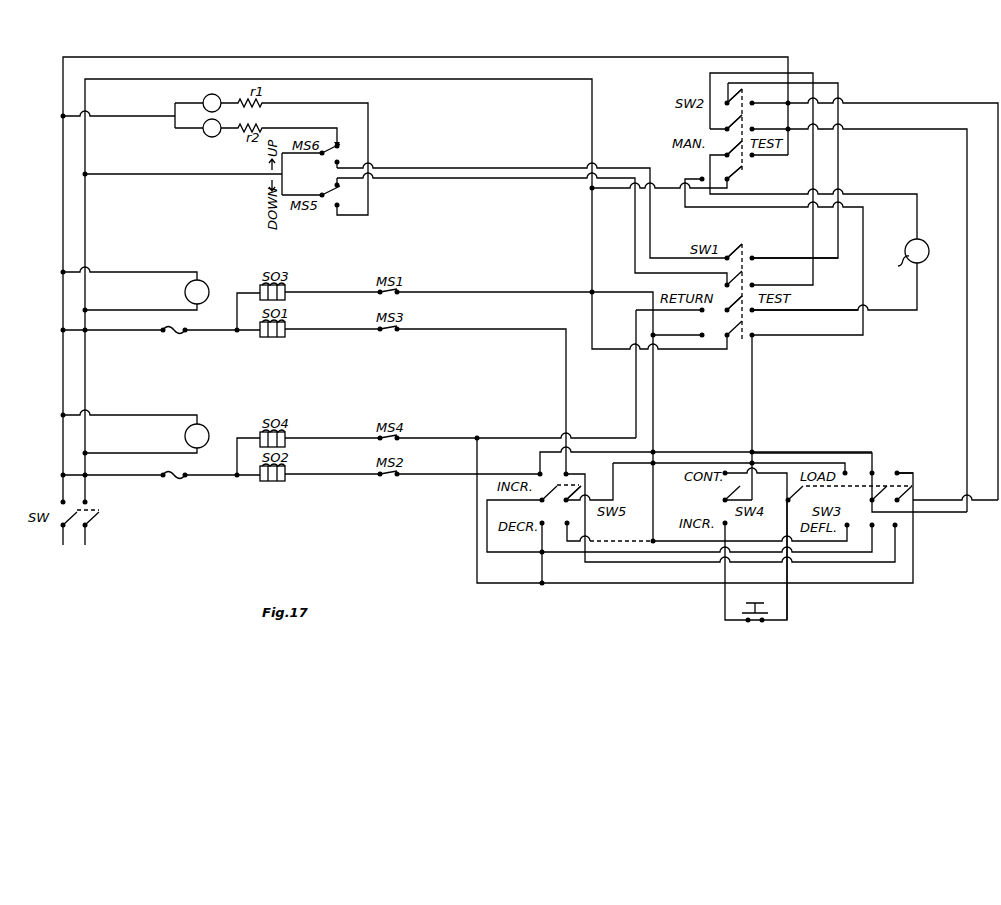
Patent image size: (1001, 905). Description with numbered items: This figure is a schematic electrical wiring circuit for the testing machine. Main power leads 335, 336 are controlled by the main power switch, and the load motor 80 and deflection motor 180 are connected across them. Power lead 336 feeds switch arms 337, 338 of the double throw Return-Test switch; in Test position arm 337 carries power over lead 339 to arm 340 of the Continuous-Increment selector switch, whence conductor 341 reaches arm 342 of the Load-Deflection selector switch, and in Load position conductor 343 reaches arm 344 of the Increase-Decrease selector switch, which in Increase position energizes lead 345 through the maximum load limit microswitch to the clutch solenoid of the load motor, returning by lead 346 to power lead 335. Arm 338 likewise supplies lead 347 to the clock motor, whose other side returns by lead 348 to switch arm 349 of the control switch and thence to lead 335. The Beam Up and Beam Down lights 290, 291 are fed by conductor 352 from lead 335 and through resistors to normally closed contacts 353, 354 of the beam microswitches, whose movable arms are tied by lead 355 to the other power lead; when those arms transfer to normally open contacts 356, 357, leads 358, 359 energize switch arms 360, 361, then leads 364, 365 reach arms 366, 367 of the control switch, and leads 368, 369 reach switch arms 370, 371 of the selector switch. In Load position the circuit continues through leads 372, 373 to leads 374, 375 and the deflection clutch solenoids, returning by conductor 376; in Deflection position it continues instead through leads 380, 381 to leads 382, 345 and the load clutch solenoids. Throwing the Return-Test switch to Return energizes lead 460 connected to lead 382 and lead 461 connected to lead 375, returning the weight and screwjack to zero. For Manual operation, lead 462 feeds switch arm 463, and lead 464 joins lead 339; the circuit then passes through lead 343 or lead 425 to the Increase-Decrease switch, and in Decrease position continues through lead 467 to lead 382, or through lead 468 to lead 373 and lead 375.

The main power lead 335 is at (632, 58).
The main power lead 336 is at (592, 87).
The conductor 352 is at (123, 118).
The Beam Up light 290 is at (203, 99).
The Beam Down light 291 is at (208, 136).
The lead 355 is at (199, 173).
The normally closed contact 354 is at (352, 144).
The normally open contact 357 is at (346, 161).
The normally open contact 356 is at (344, 185).
The normally closed contact 353 is at (340, 214).
The lead 359 is at (480, 170).
The lead 358 is at (498, 179).
The switch arm 367 is at (734, 94).
The switch arm 366 is at (732, 120).
The switch arm 349 is at (724, 154).
The switch arm 463 is at (729, 178).
The lead 369 is at (928, 104).
The lead 368 is at (896, 138).
The lead 348 is at (886, 175).
The lead 364 is at (813, 235).
The lead 365 is at (838, 217).
The lead 464 is at (678, 207).
The lead 462 is at (594, 192).
The switch arm 360 is at (734, 252).
The switch arm 361 is at (746, 262).
The switch arm 338 is at (744, 302).
The lead 347 is at (815, 310).
The lead 460 is at (679, 338).
The lead 461 is at (636, 383).
The switch arm 337 is at (754, 346).
The lead 339 is at (754, 368).
The load motor 80 is at (186, 295).
The deflection motor 180 is at (186, 439).
The lead 346 is at (204, 332).
The conductor 376 is at (202, 478).
The lead 382 is at (480, 293).
The lead 345 is at (565, 393).
The lead 375 is at (460, 430).
The lead 374 is at (440, 475).
The lead 373 is at (481, 583).
The conductor 343 is at (714, 438).
The switch arm 344 is at (578, 486).
The lead 468 is at (546, 578).
The lead 425 is at (688, 562).
The lead 372 is at (769, 448).
The lead 467 is at (640, 540).
The switch arm 340 is at (720, 497).
The lead 380 is at (806, 558).
The lead 381 is at (797, 586).
The conductor 341 is at (788, 485).
The switch arm 342 is at (880, 474).
The switch arm 370 is at (878, 466).
The switch arm 371 is at (904, 476).